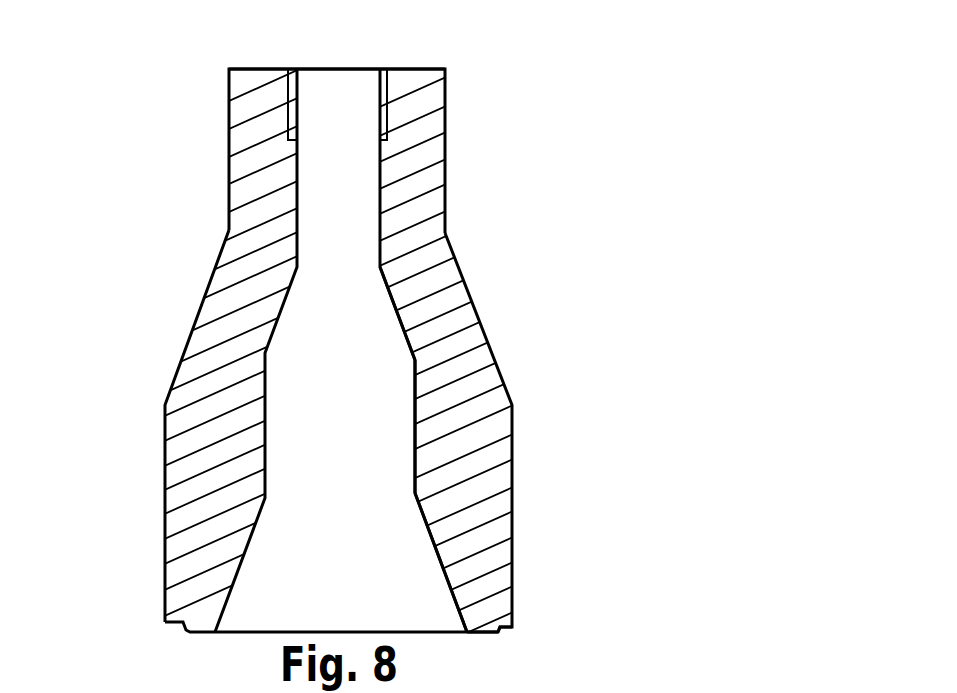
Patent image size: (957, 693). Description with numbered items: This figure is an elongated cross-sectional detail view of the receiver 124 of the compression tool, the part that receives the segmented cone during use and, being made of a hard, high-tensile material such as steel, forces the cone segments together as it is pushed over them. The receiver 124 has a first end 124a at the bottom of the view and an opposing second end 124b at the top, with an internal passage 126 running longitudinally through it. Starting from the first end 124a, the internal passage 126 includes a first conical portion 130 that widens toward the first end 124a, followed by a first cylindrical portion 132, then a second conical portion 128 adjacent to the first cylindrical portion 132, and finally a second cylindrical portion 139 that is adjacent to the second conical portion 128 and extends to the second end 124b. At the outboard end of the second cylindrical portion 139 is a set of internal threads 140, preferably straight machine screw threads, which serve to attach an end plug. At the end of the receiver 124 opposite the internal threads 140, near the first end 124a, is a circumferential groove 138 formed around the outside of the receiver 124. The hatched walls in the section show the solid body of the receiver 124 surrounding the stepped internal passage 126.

The receiver 124 is at (316, 343).
The first end 124a is at (196, 632).
The second end 124b is at (243, 69).
The internal passage 126 is at (400, 303).
The second conical portion 128 is at (365, 338).
The first conical portion 130 is at (437, 532).
The first cylindrical portion 132 is at (417, 437).
The circumferential groove 138 is at (498, 629).
The second cylindrical portion 139 is at (297, 209).
The internal threads 140 is at (383, 86).